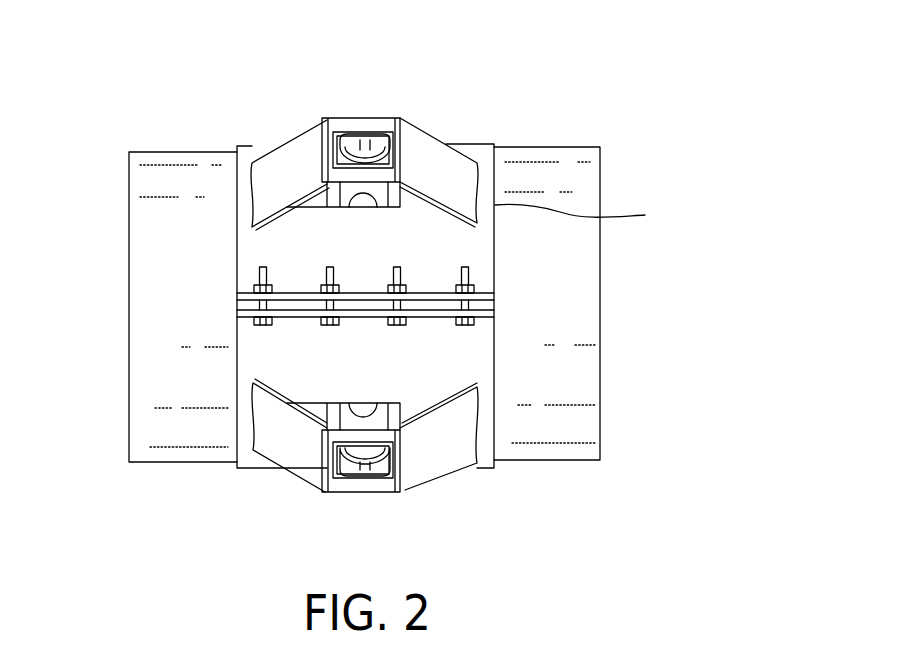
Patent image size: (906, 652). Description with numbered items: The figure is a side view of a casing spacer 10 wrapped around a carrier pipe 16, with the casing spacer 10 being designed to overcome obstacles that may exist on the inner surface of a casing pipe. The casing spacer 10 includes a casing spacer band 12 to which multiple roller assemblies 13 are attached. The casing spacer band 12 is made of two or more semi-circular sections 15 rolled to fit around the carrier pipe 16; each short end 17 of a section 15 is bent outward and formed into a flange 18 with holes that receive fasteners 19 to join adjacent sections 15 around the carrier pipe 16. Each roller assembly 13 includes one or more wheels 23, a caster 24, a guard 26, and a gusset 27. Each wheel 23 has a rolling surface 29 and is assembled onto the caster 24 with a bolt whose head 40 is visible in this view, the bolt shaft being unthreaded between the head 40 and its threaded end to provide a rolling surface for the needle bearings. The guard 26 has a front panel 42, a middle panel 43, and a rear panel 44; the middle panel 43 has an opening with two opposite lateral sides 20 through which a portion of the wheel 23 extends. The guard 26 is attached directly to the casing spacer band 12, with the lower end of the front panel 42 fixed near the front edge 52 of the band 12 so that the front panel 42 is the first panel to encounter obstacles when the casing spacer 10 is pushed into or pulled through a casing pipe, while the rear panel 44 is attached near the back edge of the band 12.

The casing spacer 10 is at (441, 106).
The casing spacer band 12 is at (323, 297).
The roller assembly 13 is at (358, 218).
The section 15 is at (493, 145).
The carrier pipe 16 is at (562, 325).
The short end 17 is at (237, 297).
The flange 18 is at (237, 290).
The fastener 19 is at (463, 273).
The lateral side 20 is at (367, 163).
The wheel 23 is at (353, 143).
The caster 24 is at (392, 200).
The guard 26 is at (265, 168).
The gusset 27 is at (303, 143).
The rolling surface 29 is at (355, 472).
The head 40 is at (350, 208).
The front panel 42 is at (252, 165).
The middle panel 43 is at (388, 133).
The rear panel 44 is at (423, 143).
The front edge 52 is at (588, 215).